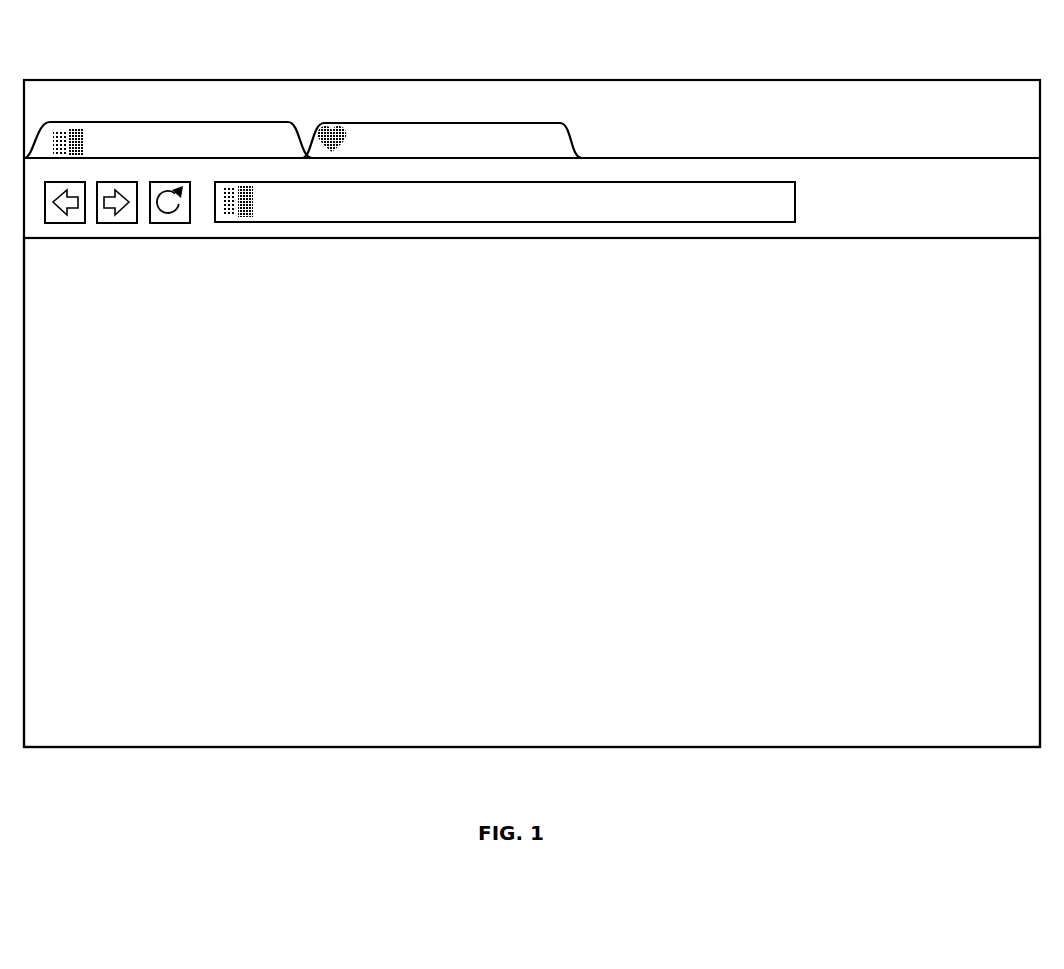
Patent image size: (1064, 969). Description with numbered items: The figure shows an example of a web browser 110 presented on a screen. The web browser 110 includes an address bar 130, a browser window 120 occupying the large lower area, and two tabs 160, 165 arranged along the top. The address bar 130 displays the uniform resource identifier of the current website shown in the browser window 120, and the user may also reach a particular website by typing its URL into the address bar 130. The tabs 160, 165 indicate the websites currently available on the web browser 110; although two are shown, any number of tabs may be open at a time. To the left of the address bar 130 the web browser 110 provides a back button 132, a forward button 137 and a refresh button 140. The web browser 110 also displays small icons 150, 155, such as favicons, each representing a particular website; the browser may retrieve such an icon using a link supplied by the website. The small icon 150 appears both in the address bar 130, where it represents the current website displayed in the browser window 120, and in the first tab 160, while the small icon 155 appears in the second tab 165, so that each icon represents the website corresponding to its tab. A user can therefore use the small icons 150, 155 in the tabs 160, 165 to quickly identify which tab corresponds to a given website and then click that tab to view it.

The web browser 110 is at (1027, 47).
The browser window 120 is at (370, 748).
The address bar 130 is at (385, 222).
The back button 132 is at (59, 223).
The forward button 137 is at (115, 223).
The refresh button 140 is at (172, 223).
The small icon 150 is at (90, 133).
The small icon 155 is at (355, 128).
The tab 160 is at (202, 122).
The tab 165 is at (474, 123).